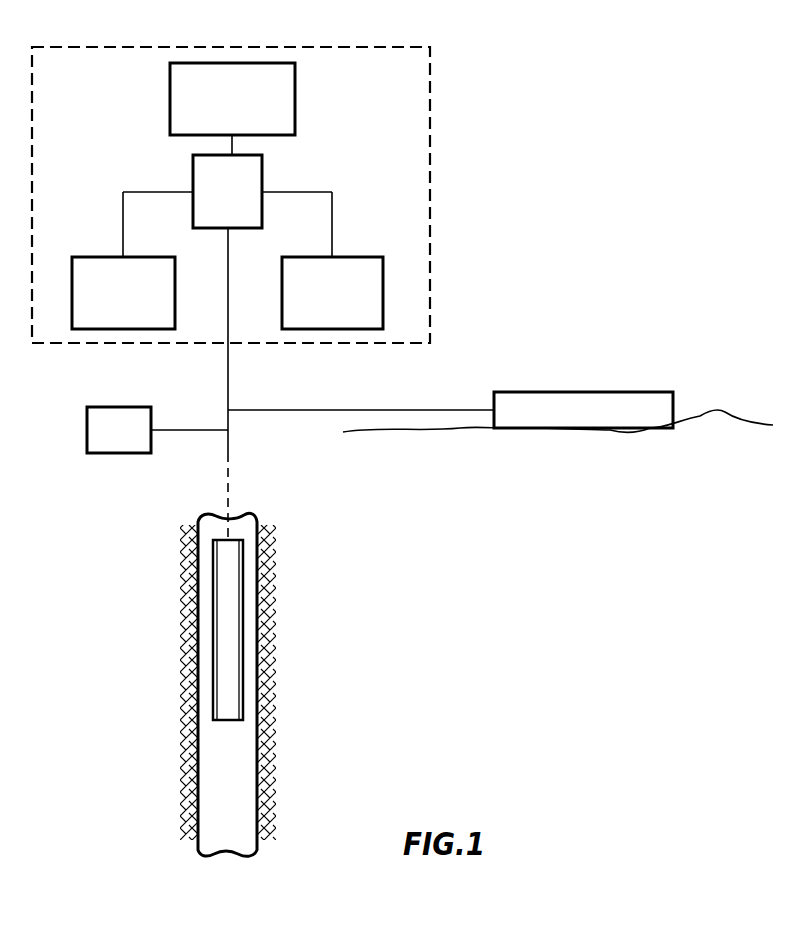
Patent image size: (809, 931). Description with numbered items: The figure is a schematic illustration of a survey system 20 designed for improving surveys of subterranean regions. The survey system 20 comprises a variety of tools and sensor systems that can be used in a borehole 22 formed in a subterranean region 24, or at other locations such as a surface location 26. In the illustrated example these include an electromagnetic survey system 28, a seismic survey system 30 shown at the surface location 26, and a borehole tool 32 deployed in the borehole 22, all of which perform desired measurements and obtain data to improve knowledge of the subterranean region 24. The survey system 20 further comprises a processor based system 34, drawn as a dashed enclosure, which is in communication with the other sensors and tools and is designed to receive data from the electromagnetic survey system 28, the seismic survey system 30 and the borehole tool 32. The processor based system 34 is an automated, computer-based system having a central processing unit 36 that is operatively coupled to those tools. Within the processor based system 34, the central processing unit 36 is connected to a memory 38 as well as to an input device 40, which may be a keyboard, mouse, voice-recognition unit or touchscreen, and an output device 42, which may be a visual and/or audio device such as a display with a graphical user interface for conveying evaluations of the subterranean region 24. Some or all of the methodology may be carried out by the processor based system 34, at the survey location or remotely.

The survey system 20 is at (582, 114).
The borehole 22 is at (245, 536).
The subterranean region 24 is at (410, 614).
The surface location 26 is at (705, 416).
The electromagnetic survey system 28 is at (98, 453).
The seismic survey system 30 is at (567, 392).
The borehole tool 32 is at (213, 636).
The processor based system 34 is at (430, 113).
The central processing unit 36 is at (262, 166).
The memory 38 is at (295, 90).
The input device 40 is at (98, 257).
The output device 42 is at (355, 257).